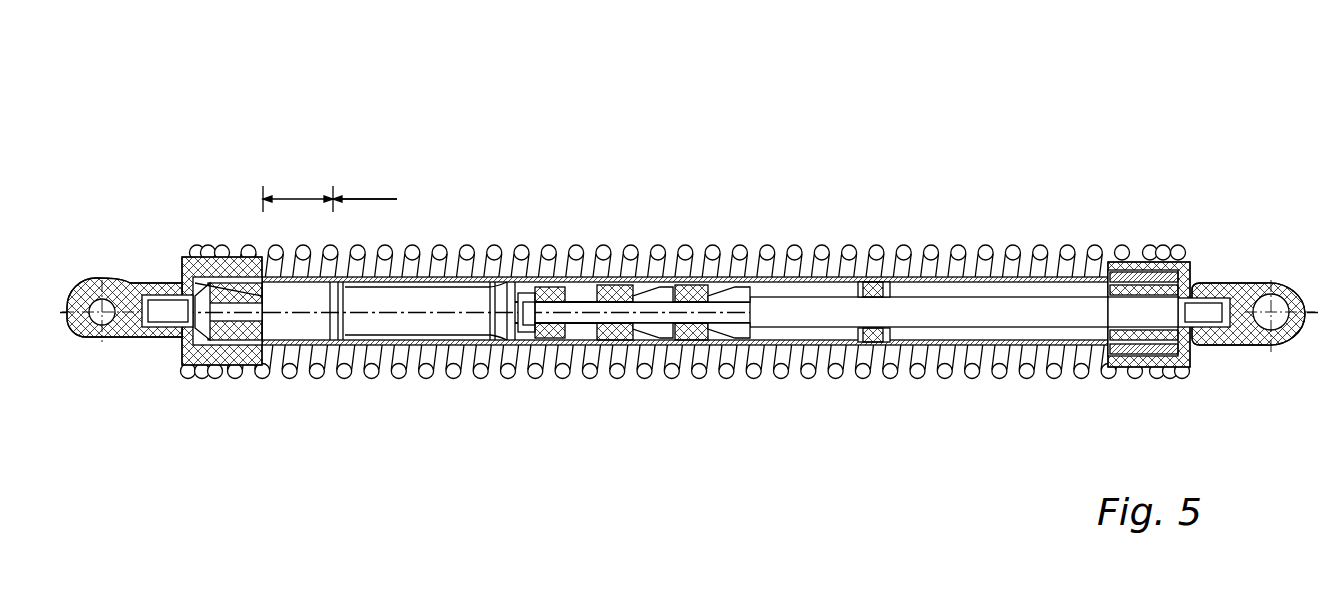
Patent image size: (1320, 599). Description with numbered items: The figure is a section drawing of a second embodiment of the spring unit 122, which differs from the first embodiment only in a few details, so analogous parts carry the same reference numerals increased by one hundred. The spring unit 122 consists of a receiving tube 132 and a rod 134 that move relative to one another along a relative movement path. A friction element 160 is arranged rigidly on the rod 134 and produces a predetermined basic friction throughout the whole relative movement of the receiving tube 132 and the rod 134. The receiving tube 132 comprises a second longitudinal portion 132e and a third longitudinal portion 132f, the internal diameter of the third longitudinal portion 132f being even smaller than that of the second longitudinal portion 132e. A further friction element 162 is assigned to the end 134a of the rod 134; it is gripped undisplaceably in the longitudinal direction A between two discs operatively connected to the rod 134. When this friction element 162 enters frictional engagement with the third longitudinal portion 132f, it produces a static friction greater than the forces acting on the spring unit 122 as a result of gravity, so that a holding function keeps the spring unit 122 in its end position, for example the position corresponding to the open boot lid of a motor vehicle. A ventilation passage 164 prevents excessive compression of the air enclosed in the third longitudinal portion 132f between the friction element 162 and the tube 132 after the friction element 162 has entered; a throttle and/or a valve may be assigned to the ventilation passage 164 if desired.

The spring unit 122 is at (973, 100).
The receiving tube 132 is at (947, 277).
The second longitudinal portion 132e is at (370, 199).
The third longitudinal portion 132f is at (297, 198).
The rod 134 is at (1067, 322).
The end of the rod 134a is at (578, 320).
The friction element 160 is at (878, 280).
The friction element 162 is at (545, 345).
The ventilation passage 164 is at (217, 246).
The longitudinal direction A is at (1120, 312).